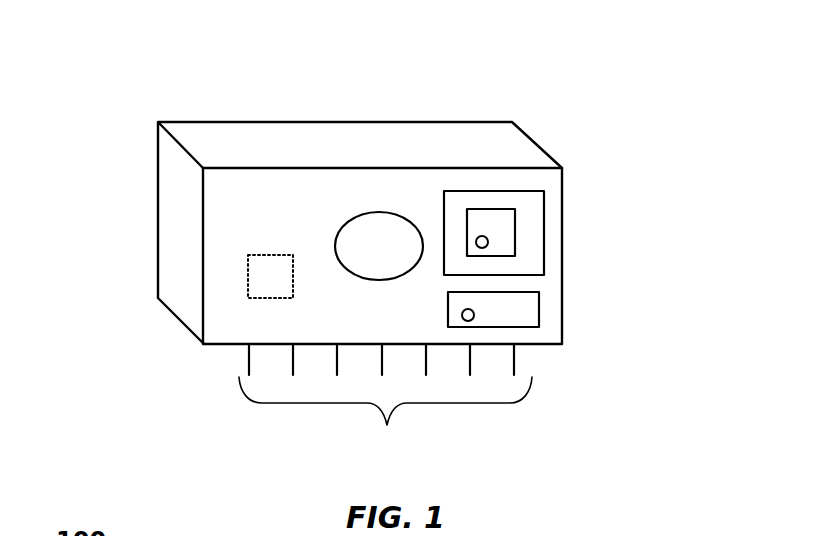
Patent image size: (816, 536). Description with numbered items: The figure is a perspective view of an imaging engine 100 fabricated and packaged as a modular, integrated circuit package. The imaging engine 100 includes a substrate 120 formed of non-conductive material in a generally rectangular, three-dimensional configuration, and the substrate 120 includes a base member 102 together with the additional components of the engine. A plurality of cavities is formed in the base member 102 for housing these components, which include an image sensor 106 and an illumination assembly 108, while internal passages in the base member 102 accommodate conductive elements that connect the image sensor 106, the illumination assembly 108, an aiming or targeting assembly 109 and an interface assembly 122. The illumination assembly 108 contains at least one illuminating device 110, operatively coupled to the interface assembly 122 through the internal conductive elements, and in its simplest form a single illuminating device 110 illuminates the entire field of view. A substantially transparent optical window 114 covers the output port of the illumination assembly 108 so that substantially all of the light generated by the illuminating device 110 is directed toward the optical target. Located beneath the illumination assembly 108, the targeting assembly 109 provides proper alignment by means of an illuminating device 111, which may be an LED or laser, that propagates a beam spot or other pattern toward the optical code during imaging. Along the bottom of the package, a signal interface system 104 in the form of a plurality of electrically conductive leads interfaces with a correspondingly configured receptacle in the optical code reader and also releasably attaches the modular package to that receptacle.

The imaging engine 100 is at (414, 175).
The base member 102 is at (520, 152).
The signal interface system 104 is at (381, 434).
The image sensor 106 is at (405, 254).
The illumination assembly 108 is at (490, 218).
The aiming or targeting assembly 109 is at (539, 307).
The illuminating device 110 is at (488, 243).
The illuminating device 111 is at (474, 316).
The optical window 114 is at (544, 277).
The substrate 120 is at (562, 203).
The interface assembly 122 is at (263, 285).